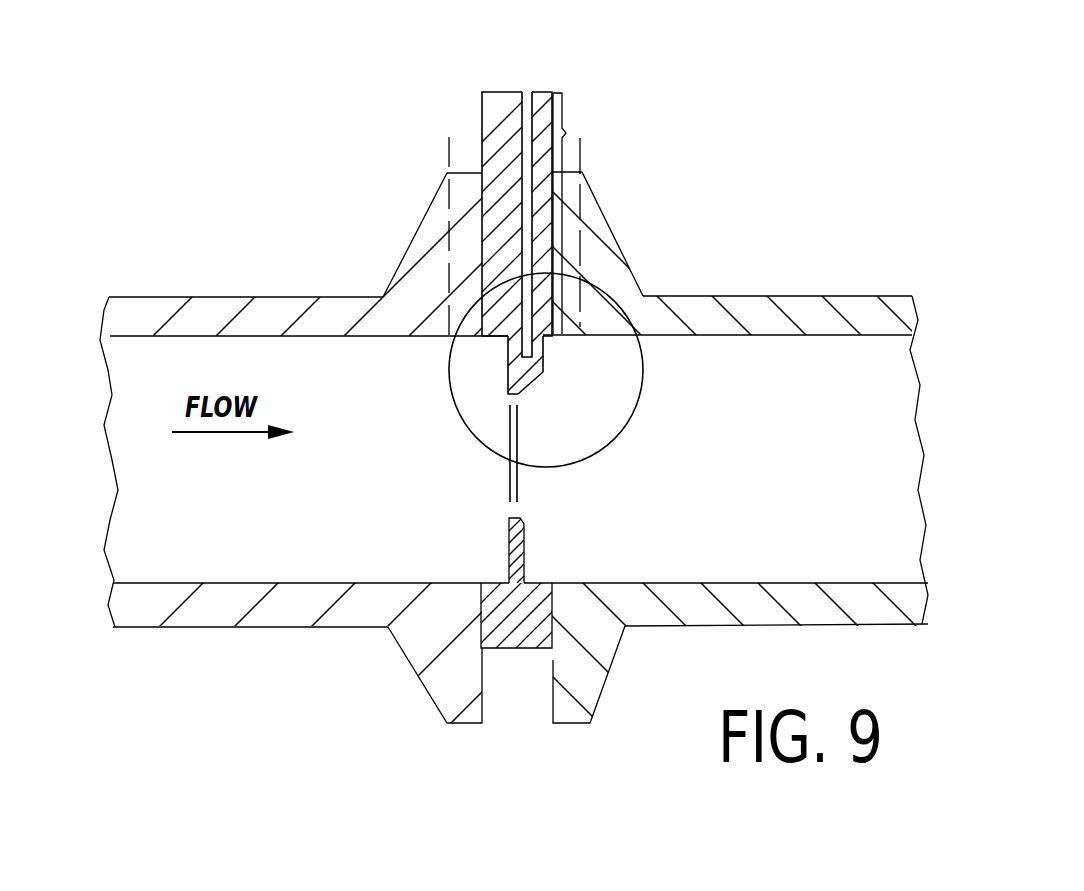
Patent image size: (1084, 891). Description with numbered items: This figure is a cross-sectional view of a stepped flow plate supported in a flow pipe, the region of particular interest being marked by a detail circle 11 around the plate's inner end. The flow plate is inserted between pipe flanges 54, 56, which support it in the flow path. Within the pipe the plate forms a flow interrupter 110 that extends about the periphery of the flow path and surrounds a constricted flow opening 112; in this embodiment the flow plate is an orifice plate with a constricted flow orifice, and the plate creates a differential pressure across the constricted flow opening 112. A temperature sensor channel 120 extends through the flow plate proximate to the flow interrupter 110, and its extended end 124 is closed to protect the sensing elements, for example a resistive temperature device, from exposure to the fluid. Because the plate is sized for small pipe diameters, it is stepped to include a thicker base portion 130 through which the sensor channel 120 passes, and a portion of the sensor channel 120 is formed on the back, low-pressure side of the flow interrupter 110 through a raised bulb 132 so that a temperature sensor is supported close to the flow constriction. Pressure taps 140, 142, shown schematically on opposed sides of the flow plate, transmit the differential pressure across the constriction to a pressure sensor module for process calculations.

The sensor assembly detail region 11 is at (643, 380).
The pipe flange 54 is at (415, 258).
The pipe flange 56 is at (607, 244).
The flow interrupter 110 is at (540, 366).
The constricted flow opening 112 is at (520, 438).
The temperature sensor channel 120 is at (533, 90).
The extended end 124 is at (534, 374).
The base portion 130 is at (556, 195).
The raised bulb 132 is at (545, 363).
The pressure tap 140 is at (449, 148).
The pressure tap 142 is at (580, 140).